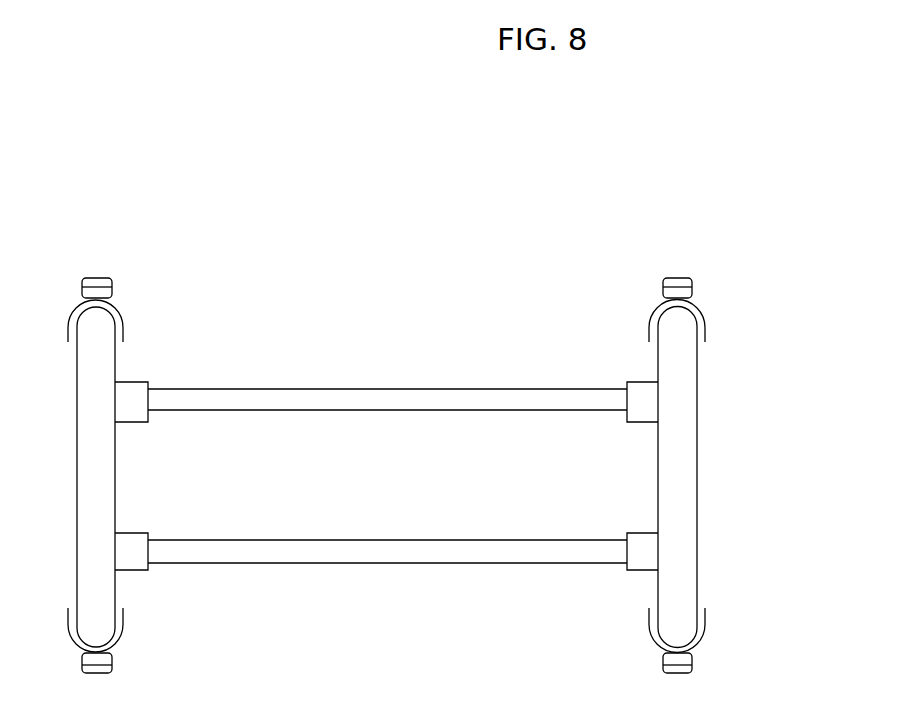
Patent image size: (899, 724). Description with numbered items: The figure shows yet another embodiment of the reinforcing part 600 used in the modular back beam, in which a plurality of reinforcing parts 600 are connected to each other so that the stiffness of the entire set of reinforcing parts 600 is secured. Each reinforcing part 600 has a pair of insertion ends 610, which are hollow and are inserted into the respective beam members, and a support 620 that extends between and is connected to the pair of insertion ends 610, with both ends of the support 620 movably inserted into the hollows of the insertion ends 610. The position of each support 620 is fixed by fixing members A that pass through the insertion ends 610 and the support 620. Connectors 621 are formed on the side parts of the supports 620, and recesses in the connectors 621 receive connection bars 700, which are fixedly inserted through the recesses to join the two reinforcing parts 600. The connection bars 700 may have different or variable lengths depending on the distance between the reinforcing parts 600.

The reinforcing part 600 is at (714, 372).
The insertion end 610 is at (120, 311).
The support 620 is at (683, 462).
The connector 621 is at (132, 402).
The connection bar 700 is at (371, 395).
The fixing member A is at (93, 278).